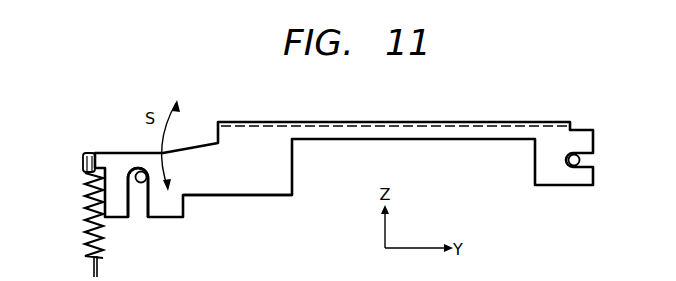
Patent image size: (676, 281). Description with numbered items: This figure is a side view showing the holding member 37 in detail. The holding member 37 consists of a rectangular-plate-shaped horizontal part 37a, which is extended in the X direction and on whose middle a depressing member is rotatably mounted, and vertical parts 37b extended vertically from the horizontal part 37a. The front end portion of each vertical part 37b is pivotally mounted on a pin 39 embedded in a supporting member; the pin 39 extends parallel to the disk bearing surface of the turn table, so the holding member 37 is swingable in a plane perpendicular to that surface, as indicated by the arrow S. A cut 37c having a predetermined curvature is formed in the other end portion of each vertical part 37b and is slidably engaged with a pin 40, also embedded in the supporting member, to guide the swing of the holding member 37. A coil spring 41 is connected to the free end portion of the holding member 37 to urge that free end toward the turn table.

The holding member 37 is at (523, 117).
The horizontal part 37a is at (468, 120).
The vertical part 37b is at (260, 183).
The cut 37c is at (143, 205).
The pin 39 is at (580, 158).
The pin 40 is at (134, 186).
The coil spring 41 is at (85, 204).